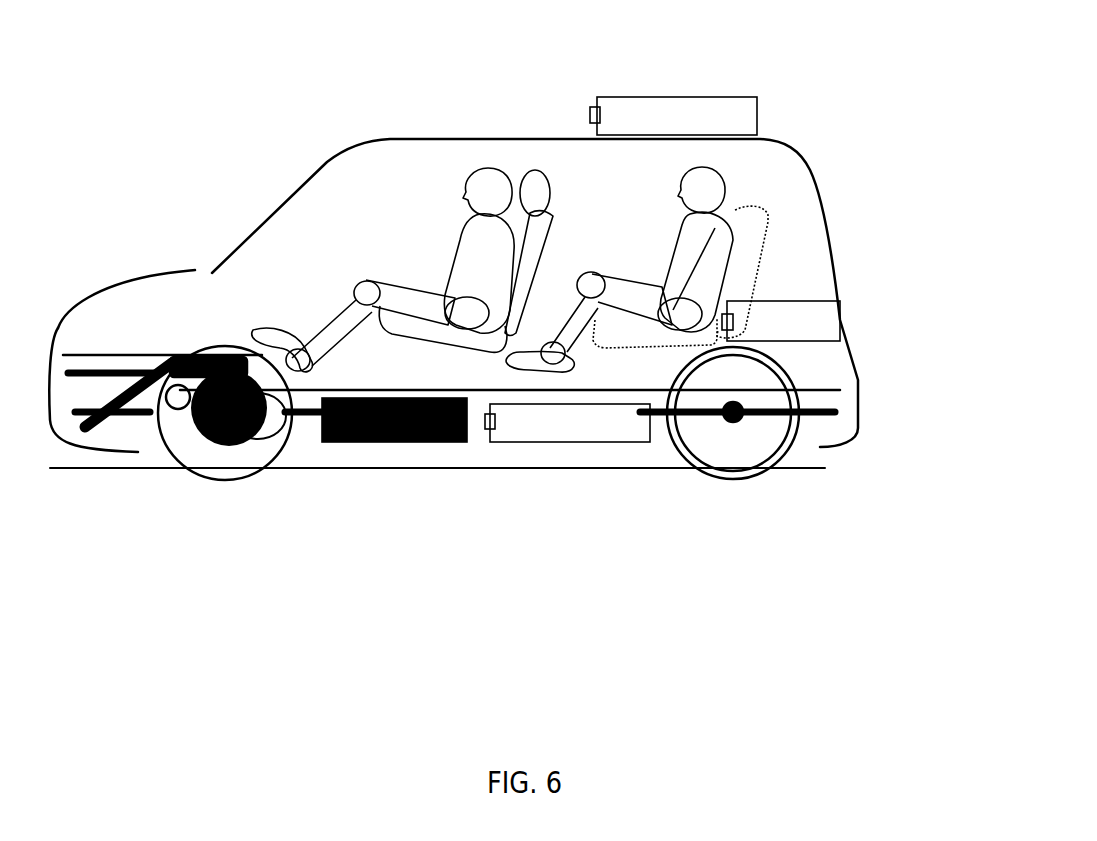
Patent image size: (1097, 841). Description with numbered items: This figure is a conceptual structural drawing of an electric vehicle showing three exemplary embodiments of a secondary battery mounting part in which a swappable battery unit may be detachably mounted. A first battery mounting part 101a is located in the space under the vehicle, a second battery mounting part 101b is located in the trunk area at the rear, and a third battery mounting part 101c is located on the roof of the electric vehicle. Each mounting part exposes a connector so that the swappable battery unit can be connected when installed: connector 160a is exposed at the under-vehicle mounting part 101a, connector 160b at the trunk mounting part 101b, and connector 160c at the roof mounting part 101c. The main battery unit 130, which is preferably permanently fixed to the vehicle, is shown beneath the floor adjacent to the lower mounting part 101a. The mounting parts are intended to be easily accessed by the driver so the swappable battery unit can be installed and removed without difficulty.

The battery mounting part 101a is at (593, 442).
The battery mounting part 101b is at (813, 307).
The battery mounting part 101c is at (712, 113).
The connector 160a is at (487, 428).
The connector 160b is at (733, 322).
The connector 160c is at (590, 115).
The main battery unit 130 is at (372, 422).